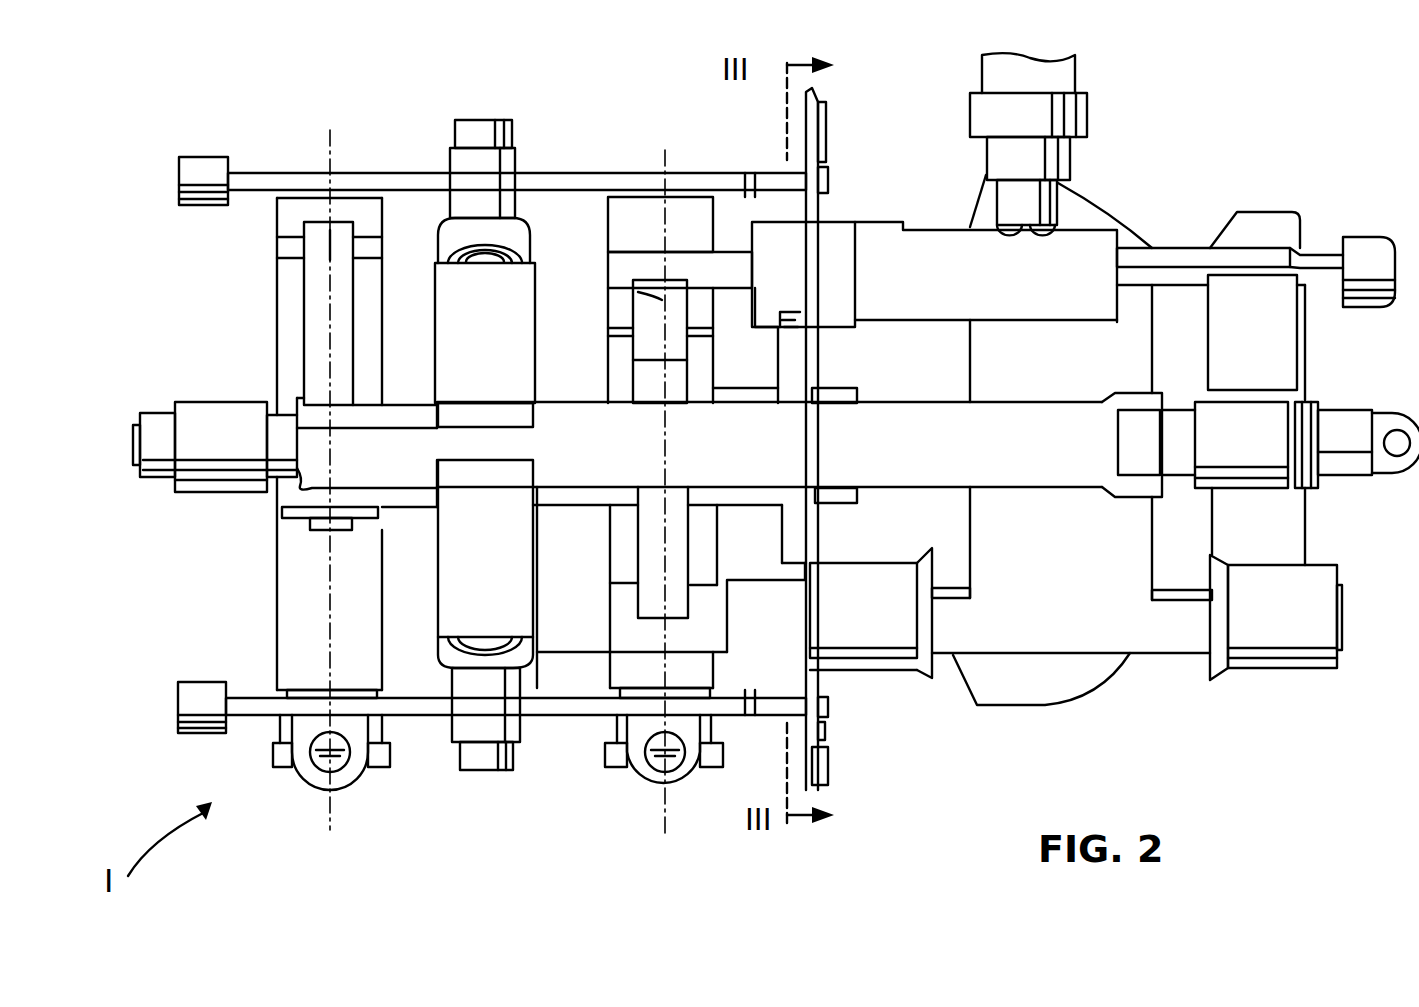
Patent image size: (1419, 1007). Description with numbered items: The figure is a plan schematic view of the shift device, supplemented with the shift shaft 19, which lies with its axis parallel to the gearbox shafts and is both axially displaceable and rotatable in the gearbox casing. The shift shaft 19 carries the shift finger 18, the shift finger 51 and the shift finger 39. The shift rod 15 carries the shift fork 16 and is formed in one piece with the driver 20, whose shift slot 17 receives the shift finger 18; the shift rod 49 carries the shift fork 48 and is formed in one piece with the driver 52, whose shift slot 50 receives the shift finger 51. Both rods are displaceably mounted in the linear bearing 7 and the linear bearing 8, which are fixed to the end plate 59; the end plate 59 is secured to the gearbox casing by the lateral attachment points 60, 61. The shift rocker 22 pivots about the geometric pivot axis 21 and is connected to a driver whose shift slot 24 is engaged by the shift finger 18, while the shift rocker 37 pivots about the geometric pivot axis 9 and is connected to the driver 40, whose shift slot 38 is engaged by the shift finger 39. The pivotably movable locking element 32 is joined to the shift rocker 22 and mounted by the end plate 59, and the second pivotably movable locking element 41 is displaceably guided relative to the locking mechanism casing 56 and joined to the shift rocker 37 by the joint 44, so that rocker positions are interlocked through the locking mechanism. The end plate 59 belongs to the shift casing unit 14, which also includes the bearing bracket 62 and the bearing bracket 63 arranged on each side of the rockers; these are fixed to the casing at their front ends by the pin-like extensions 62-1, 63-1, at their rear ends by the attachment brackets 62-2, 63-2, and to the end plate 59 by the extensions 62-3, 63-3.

The linear bearing 7 is at (803, 274).
The linear bearing 8 is at (871, 613).
The geometric pivot axis 9 is at (330, 152).
The shift casing unit 14 is at (578, 725).
The shift rod 15 is at (1190, 240).
The shift fork 16 is at (1312, 352).
The shift slot 17 is at (675, 292).
The shift finger 18 is at (660, 379).
The shift shaft 19 is at (1060, 500).
The driver 20 is at (625, 280).
The geometric pivot axis 21 is at (665, 160).
The shift rocker 22 is at (606, 560).
The shift slot 24 is at (645, 302).
The pivotably movable locking element 32 is at (760, 378).
The shift rocker 37 is at (272, 642).
The shift slot 38 is at (350, 245).
The shift finger 39 is at (328, 313).
The driver 40 is at (288, 305).
The second pivotably movable locking element 41 is at (593, 508).
The joint 44 is at (335, 538).
The shift fork 48 is at (1080, 414).
The shift rod 49 is at (960, 665).
The shift slot 50 is at (665, 610).
The shift finger 51 is at (663, 552).
The driver 52 is at (625, 633).
The locking mechanism casing 56 is at (780, 515).
The end plate 59 is at (820, 210).
The lateral attachment point 60 is at (818, 160).
The lateral attachment point 61 is at (825, 728).
The bearing bracket 62 is at (408, 172).
The pin-like extension 62-1 is at (188, 178).
The attachment bracket 62-2 is at (815, 93).
The extension 62-3 is at (828, 188).
The bearing bracket 63 is at (432, 735).
The pin-like extension 63-1 is at (196, 738).
The attachment bracket 63-2 is at (806, 790).
The extension 63-3 is at (828, 707).